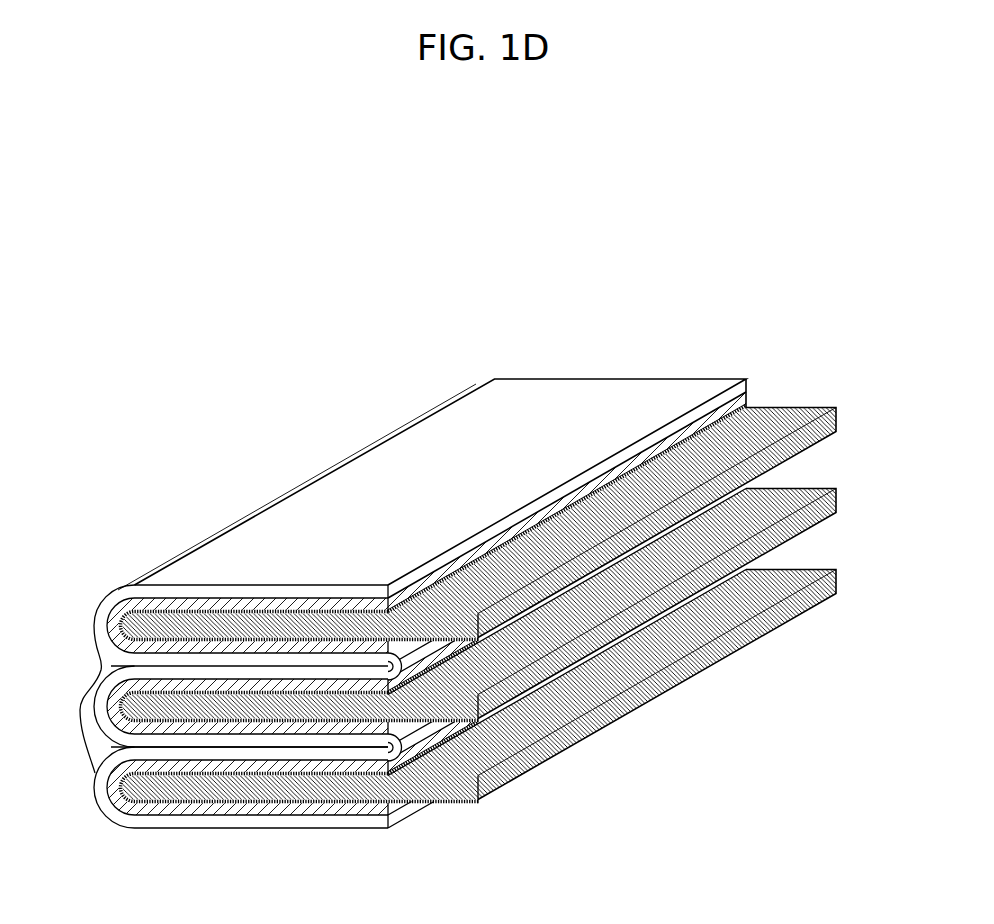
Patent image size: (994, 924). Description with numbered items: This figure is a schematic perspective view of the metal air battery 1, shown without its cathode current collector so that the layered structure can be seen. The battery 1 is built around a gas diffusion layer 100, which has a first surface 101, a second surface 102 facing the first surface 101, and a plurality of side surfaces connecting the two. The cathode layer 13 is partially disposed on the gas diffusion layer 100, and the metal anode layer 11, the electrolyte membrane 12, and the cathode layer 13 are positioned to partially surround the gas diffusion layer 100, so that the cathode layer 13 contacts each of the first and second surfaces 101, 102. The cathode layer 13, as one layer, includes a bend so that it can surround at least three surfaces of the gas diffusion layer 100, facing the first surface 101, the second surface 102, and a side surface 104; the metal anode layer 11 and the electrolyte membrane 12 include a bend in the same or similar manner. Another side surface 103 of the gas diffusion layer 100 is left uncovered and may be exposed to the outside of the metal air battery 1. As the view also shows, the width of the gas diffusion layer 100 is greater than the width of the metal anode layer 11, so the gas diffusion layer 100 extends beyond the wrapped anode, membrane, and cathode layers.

The metal air battery 1 is at (259, 384).
The gas diffusion layer 100 is at (825, 393).
The metal anode layer 11 is at (103, 600).
The electrolyte membrane 12 is at (112, 617).
The cathode layer 13 is at (110, 633).
The first surface 101 is at (243, 588).
The second surface 102 is at (343, 757).
The side surface 103 is at (600, 540).
The side surface 104 is at (112, 705).